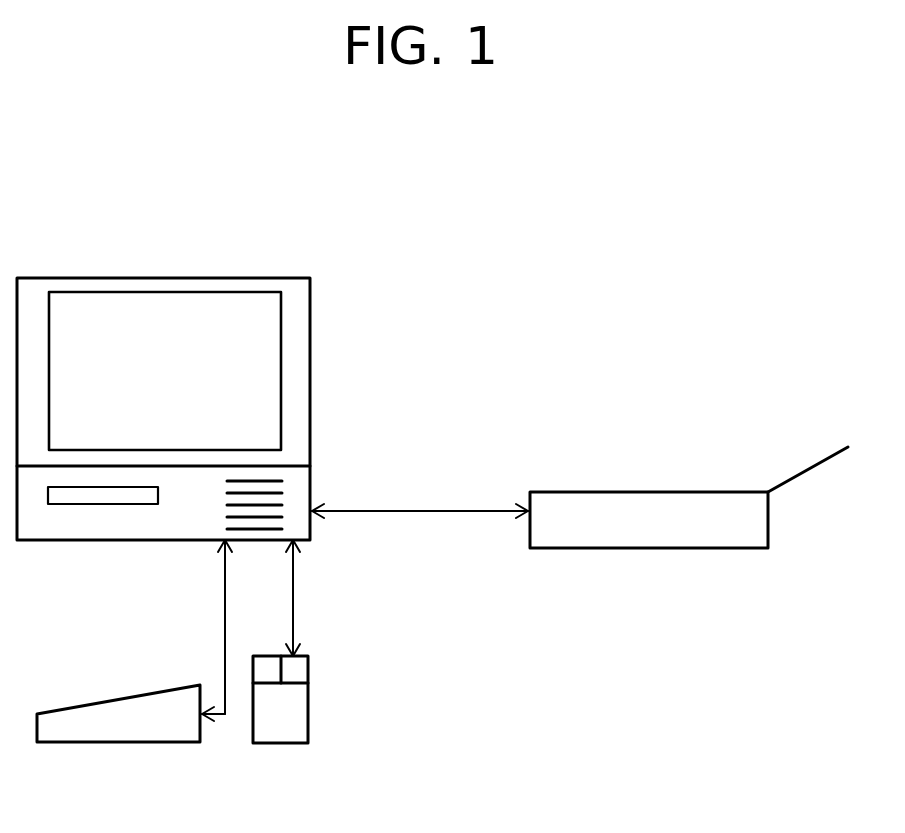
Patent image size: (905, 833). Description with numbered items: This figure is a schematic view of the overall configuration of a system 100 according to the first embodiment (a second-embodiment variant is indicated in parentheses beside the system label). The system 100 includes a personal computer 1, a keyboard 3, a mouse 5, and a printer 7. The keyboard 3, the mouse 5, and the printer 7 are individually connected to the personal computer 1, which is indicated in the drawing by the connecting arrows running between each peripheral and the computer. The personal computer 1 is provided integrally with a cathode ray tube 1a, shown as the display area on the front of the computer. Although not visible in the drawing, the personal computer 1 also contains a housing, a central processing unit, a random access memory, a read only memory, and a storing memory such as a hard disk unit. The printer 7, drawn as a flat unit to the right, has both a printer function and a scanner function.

The system 100 is at (451, 370).
The personal computer 1 is at (253, 278).
The cathode ray tube (CRT) 1a is at (250, 348).
The keyboard 3 is at (83, 705).
The mouse 5 is at (309, 668).
The printer 7 is at (575, 491).